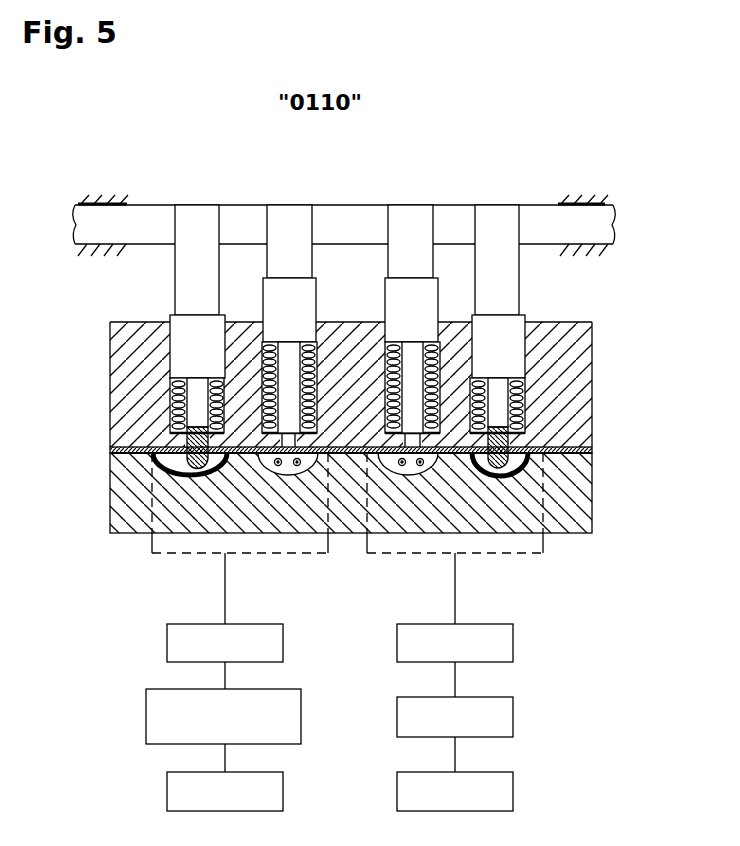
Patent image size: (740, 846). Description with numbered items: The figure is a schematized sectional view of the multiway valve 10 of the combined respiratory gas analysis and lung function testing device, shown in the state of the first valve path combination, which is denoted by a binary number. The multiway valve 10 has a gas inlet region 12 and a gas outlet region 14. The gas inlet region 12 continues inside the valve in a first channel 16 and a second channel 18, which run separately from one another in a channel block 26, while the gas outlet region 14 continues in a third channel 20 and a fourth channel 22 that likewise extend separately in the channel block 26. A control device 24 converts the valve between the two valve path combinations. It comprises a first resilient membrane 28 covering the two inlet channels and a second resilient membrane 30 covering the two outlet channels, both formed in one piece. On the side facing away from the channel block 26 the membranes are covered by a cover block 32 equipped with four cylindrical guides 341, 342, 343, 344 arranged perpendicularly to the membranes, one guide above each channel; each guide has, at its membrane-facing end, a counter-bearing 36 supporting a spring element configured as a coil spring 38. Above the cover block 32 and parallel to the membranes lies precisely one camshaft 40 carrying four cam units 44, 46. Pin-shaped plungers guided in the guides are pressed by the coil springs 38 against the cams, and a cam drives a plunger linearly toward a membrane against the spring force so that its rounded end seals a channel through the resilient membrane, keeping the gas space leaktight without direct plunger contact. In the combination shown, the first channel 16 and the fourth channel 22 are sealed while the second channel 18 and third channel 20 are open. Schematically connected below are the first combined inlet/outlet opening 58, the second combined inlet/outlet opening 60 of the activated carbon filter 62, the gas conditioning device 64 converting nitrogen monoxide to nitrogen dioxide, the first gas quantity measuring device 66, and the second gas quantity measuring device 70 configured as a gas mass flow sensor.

The multiway valve 10 is at (626, 139).
The gas inlet region 12 is at (199, 537).
The gas outlet region 14 is at (501, 538).
The first channel 16 is at (170, 453).
The second channel 18 is at (283, 471).
The third channel 20 is at (412, 473).
The fourth channel 22 is at (533, 463).
The control device 24 is at (634, 401).
The channel block 26 is at (130, 517).
The first resilient membrane 28 is at (170, 455).
The second resilient membrane 30 is at (590, 449).
The cover block 32 is at (577, 415).
The first cylindrical guide 341 is at (177, 410).
The second cylindrical guide 342 is at (265, 397).
The third cylindrical guide 343 is at (436, 430).
The fourth cylindrical guide 344 is at (520, 410).
The counter-bearing 36 is at (380, 427).
The coil spring 38 is at (175, 392).
The camshaft 40 is at (580, 230).
The cam unit 44 is at (413, 227).
The cam unit 46 is at (200, 222).
The first combined inlet/outlet opening 58 is at (225, 791).
The second combined inlet/outlet opening 60 is at (455, 791).
The activated carbon filter 62 is at (455, 717).
The gas conditioning device 64 is at (225, 643).
The first gas quantity measuring device 66 is at (455, 643).
The second gas quantity measuring device 70 is at (223, 716).